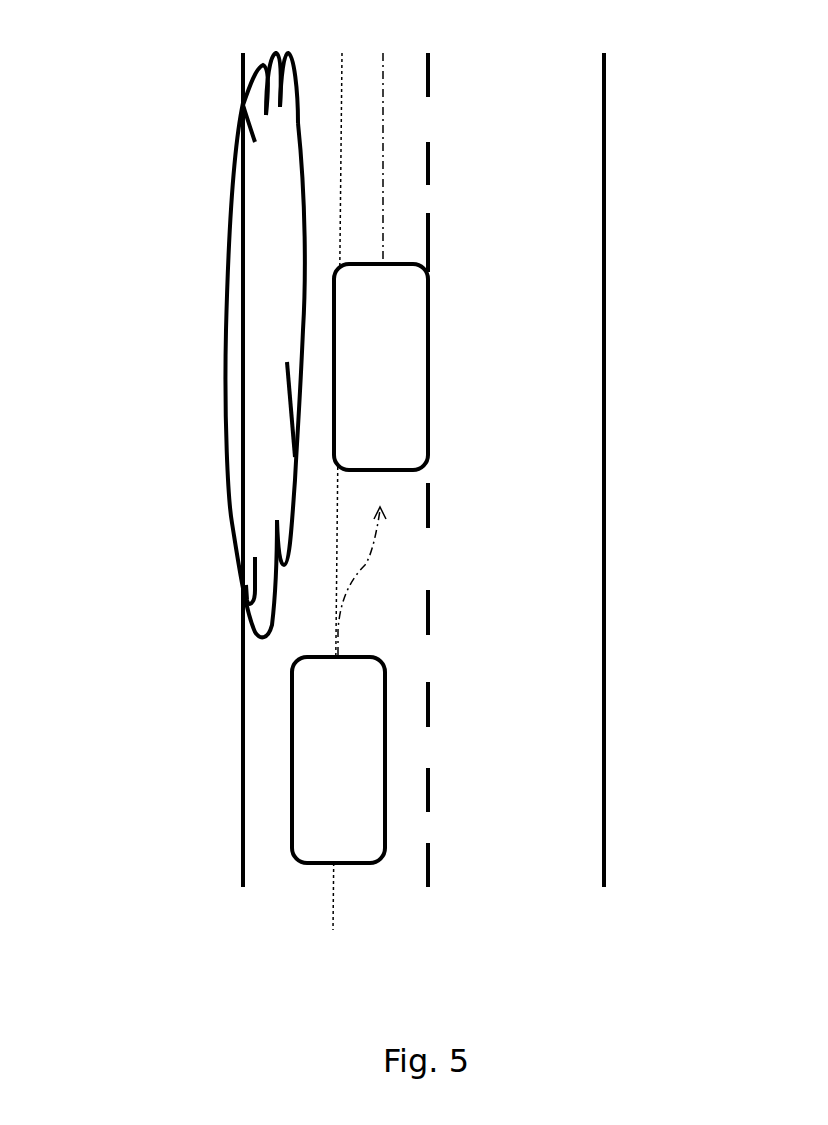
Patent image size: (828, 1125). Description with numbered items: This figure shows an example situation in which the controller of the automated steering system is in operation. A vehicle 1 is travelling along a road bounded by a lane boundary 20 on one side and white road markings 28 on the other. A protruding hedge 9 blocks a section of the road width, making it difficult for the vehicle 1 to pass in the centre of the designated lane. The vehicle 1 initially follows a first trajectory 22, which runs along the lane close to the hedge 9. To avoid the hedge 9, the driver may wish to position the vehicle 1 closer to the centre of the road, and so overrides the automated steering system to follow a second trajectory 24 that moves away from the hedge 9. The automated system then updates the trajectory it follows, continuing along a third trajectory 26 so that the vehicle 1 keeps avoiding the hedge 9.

The vehicle 1 is at (360, 563).
The hedge 9 is at (258, 323).
The lane boundary 20 is at (604, 290).
The first trajectory 22 is at (338, 644).
The second trajectory 24 is at (372, 560).
The third trajectory 26 is at (383, 118).
The white road markings 28 is at (428, 615).